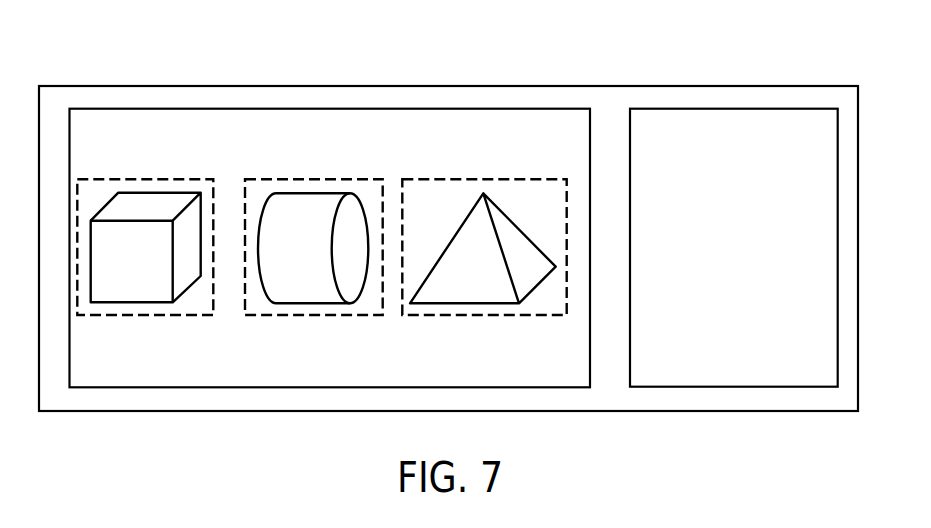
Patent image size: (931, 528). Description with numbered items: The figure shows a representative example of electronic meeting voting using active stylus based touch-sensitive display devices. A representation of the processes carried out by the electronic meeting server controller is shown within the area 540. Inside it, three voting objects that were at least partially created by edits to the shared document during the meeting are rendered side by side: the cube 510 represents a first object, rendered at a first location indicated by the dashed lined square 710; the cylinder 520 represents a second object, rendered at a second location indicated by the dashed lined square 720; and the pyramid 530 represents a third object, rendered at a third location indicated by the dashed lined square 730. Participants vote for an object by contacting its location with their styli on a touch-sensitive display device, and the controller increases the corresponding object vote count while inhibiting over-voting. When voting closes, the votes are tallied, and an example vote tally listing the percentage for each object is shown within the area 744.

The area 540 is at (552, 85).
The vote tally area 744 is at (793, 387).
The cube 510 is at (128, 292).
The cylinder 520 is at (295, 293).
The pyramid 530 is at (467, 293).
The dashed lined square 710 is at (195, 317).
The dashed lined square 720 is at (348, 317).
The dashed lined square 730 is at (513, 317).